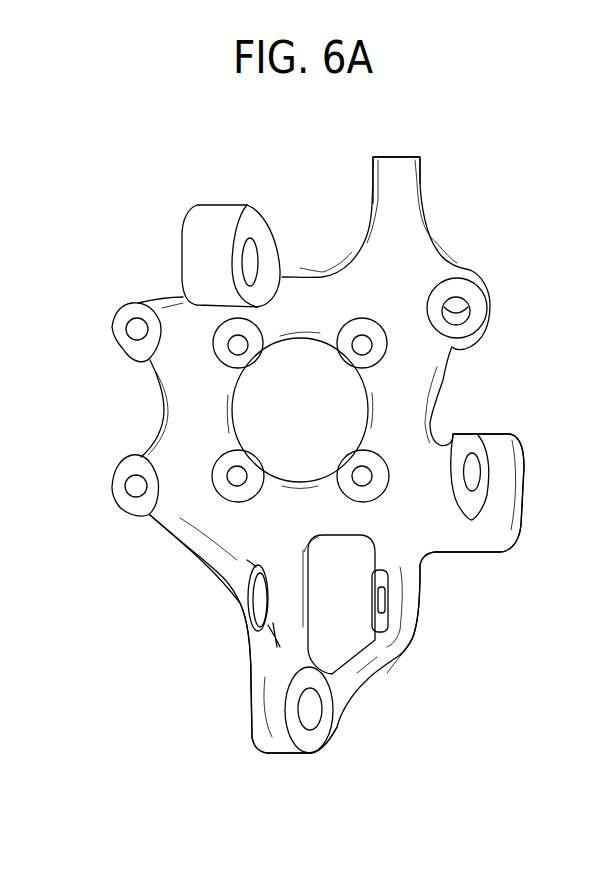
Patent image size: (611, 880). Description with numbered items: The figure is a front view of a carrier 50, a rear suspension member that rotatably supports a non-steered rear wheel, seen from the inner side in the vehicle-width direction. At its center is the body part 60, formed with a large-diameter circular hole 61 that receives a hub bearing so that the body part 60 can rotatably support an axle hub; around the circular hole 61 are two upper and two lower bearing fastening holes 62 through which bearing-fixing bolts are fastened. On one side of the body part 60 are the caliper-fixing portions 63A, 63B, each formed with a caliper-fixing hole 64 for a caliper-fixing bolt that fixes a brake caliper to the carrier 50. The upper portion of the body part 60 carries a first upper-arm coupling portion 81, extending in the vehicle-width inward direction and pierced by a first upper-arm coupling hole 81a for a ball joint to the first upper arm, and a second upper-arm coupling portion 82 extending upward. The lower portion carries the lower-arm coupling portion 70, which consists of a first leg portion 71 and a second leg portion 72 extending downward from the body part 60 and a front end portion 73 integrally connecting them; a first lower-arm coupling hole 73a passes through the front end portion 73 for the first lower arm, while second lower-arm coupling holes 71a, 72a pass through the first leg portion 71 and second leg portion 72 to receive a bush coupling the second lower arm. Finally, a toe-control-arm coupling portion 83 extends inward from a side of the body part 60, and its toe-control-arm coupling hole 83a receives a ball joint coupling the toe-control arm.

The carrier 50 is at (520, 181).
The body part 60 is at (417, 392).
The circular hole 61 is at (234, 412).
The bearing fastening holes 62 is at (232, 350).
The caliper-fixing portion 63A is at (132, 303).
The caliper-fixing portion 63B is at (138, 518).
The caliper-fixing hole 64 is at (126, 330).
The lower-arm coupling portion 70 is at (425, 664).
The first leg portion 71 is at (257, 647).
The second lower-arm coupling hole 71a is at (250, 588).
The second leg portion 72 is at (420, 588).
The second lower-arm coupling hole 72a is at (373, 632).
The front end portion 73 is at (265, 740).
The first lower-arm coupling hole 73a is at (318, 722).
The first upper-arm coupling portion 81 is at (252, 212).
The first upper-arm coupling hole 81a is at (257, 257).
The second upper-arm coupling portion 82 is at (412, 187).
The toe-control-arm coupling portion 83 is at (503, 533).
The toe-control-arm coupling hole 83a is at (478, 478).